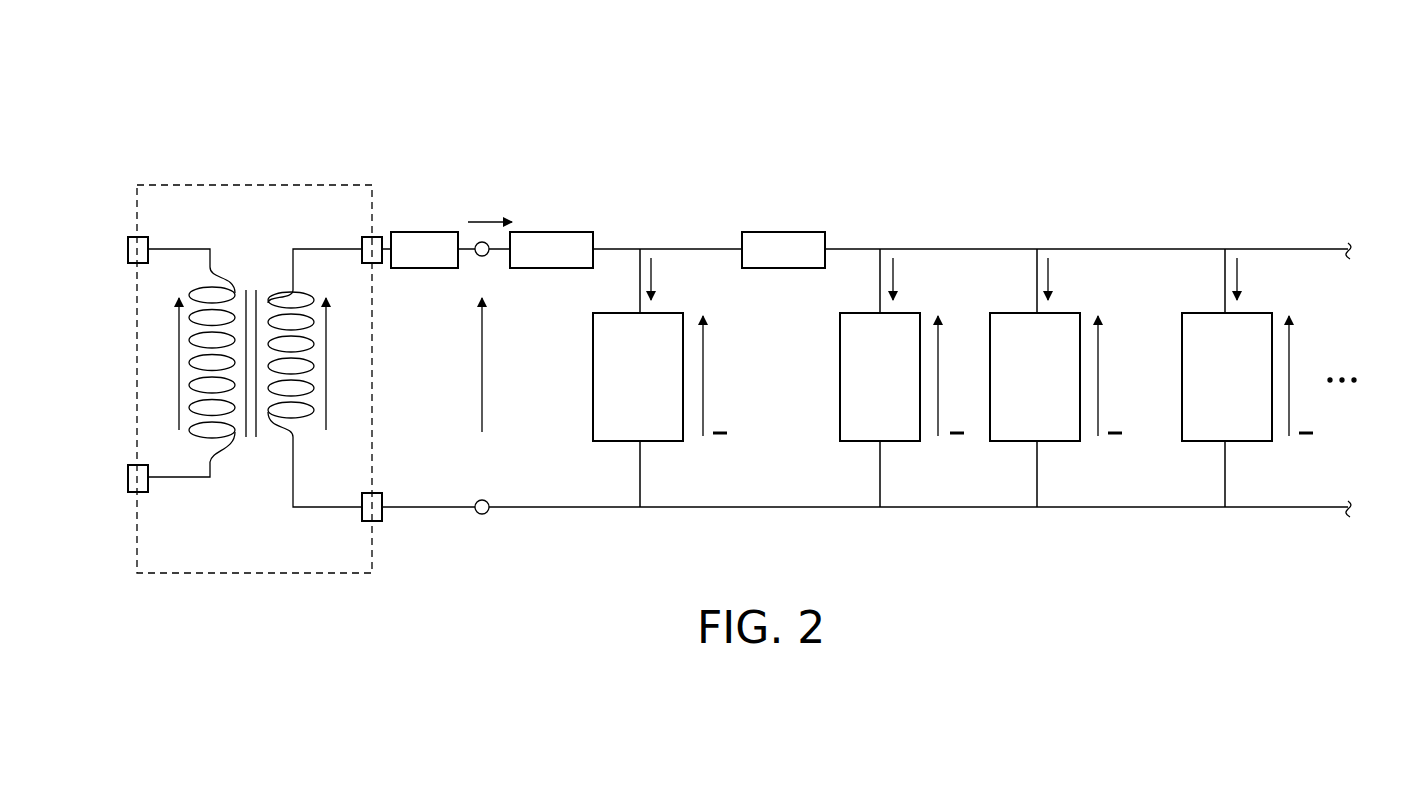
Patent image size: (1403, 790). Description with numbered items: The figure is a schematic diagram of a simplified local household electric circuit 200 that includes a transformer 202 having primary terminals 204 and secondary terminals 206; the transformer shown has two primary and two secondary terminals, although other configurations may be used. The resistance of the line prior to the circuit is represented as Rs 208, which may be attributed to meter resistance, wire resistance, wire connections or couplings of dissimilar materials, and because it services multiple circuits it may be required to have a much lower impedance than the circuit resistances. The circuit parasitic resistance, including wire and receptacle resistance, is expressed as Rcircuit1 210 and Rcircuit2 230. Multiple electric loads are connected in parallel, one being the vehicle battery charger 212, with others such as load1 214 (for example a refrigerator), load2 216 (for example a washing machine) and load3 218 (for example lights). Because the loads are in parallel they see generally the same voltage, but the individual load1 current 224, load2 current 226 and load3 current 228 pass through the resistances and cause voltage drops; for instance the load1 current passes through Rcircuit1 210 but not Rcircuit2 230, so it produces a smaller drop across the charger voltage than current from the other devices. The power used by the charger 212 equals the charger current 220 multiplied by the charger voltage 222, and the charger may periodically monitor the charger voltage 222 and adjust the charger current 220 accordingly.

The household electric circuit 200 is at (851, 82).
The transformer 202 is at (218, 185).
The primary terminals 204 is at (130, 237).
The secondary terminals 206 is at (360, 247).
The Rs 208 is at (430, 232).
The Rcircuit1 210 is at (550, 232).
The vehicle battery charger 212 is at (860, 443).
The load1 214 is at (625, 443).
The load2 216 is at (1030, 443).
The load3 218 is at (1215, 443).
The charger current 220 is at (895, 268).
The charger voltage 222 is at (942, 400).
The load1 current 224 is at (655, 268).
The load2 current 226 is at (1052, 268).
The load3 current 228 is at (1240, 268).
The Rcircuit2 230 is at (790, 232).